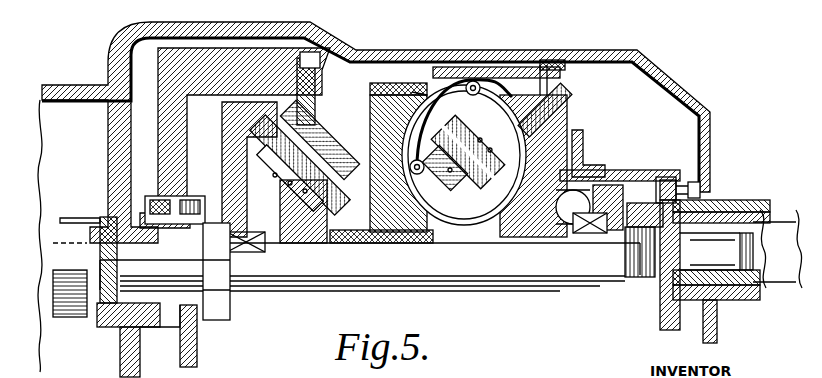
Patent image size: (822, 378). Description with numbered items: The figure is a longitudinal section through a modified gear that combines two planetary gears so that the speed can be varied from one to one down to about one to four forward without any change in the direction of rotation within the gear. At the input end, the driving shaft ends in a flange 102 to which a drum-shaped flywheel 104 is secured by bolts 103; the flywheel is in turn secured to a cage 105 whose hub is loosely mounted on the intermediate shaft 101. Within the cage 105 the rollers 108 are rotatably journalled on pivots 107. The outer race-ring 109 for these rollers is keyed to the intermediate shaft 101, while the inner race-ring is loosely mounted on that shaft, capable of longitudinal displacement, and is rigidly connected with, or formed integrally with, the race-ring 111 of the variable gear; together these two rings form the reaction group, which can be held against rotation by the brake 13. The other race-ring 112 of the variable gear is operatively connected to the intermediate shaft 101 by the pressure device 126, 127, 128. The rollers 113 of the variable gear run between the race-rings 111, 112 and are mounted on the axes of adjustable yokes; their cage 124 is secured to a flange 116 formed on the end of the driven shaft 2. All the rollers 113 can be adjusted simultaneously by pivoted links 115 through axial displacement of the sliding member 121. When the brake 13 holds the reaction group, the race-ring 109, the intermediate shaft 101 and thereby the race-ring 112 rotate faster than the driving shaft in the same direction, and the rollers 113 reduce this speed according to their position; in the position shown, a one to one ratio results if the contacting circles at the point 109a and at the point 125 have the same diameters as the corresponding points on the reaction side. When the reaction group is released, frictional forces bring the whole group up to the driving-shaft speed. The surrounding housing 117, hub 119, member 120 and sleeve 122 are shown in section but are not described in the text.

The driven shaft 2 is at (777, 222).
The brake 13 is at (414, 92).
The intermediate shaft 101 is at (480, 262).
The flange 102 is at (178, 330).
The bolts 103 is at (228, 242).
The drum-shaped flywheel 104 is at (170, 60).
The cage 105 is at (310, 95).
The pivots 107 is at (318, 118).
The rollers 108 is at (352, 232).
The outer race-ring 109 is at (240, 110).
The contacting point 109a is at (258, 138).
The race-ring of the variable gear 111 is at (388, 90).
The other race-ring of the variable gear 112 is at (560, 68).
The rollers 113 is at (492, 122).
The pivoted links 115 is at (448, 78).
The flange 116 is at (668, 176).
The outer housing 117 is at (150, 26).
The hub 119 is at (63, 306).
The stop 120 is at (588, 150).
The sliding member 121 is at (552, 106).
The sleeve 122 is at (727, 212).
The cage 124 is at (468, 76).
The contacting point 125 is at (549, 60).
The pressure device 126 is at (575, 232).
The pressure device 127 is at (605, 240).
The pressure device 128 is at (641, 278).